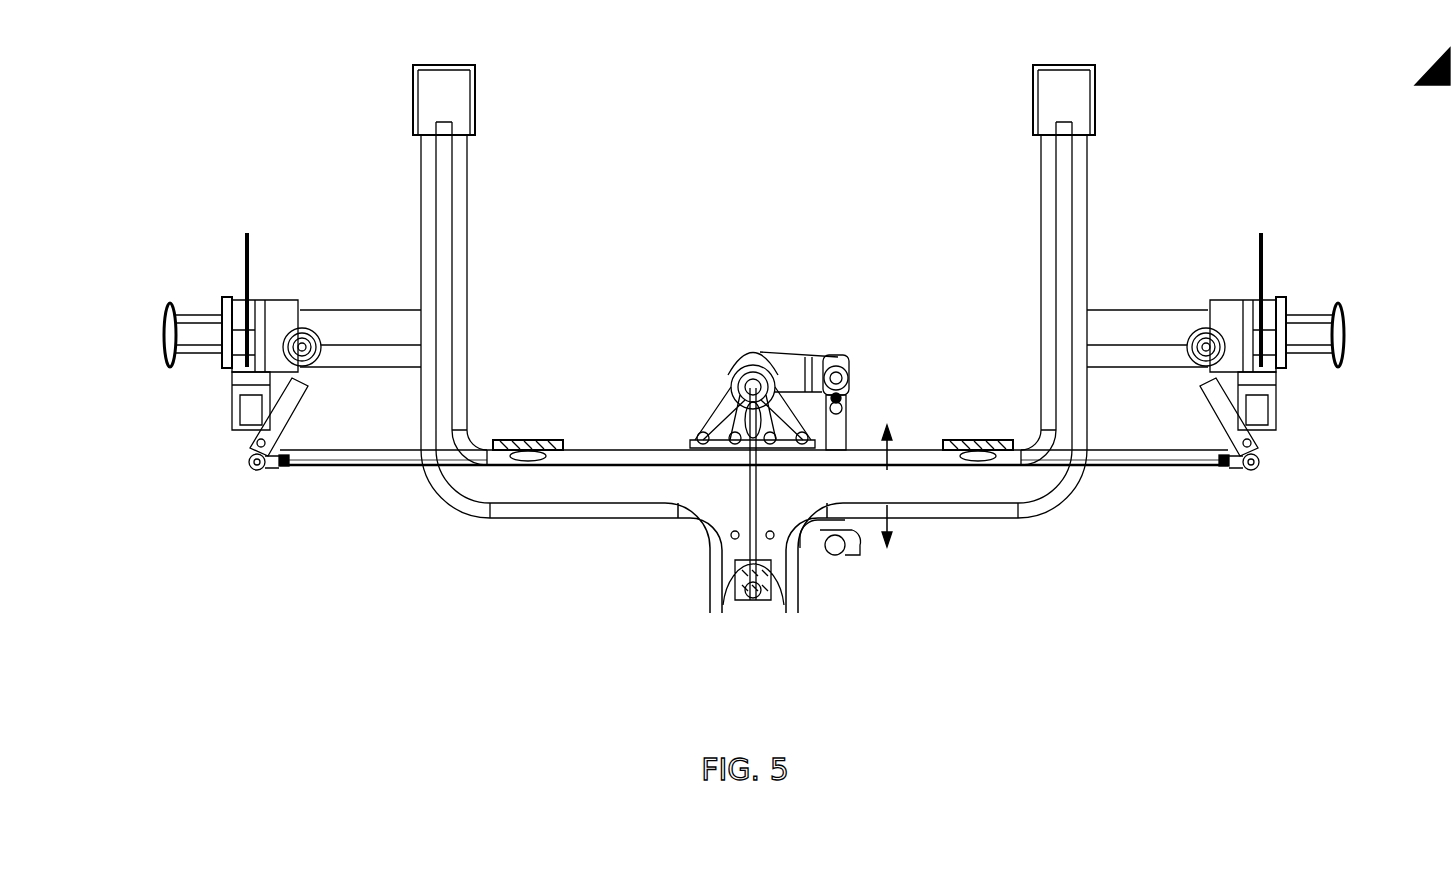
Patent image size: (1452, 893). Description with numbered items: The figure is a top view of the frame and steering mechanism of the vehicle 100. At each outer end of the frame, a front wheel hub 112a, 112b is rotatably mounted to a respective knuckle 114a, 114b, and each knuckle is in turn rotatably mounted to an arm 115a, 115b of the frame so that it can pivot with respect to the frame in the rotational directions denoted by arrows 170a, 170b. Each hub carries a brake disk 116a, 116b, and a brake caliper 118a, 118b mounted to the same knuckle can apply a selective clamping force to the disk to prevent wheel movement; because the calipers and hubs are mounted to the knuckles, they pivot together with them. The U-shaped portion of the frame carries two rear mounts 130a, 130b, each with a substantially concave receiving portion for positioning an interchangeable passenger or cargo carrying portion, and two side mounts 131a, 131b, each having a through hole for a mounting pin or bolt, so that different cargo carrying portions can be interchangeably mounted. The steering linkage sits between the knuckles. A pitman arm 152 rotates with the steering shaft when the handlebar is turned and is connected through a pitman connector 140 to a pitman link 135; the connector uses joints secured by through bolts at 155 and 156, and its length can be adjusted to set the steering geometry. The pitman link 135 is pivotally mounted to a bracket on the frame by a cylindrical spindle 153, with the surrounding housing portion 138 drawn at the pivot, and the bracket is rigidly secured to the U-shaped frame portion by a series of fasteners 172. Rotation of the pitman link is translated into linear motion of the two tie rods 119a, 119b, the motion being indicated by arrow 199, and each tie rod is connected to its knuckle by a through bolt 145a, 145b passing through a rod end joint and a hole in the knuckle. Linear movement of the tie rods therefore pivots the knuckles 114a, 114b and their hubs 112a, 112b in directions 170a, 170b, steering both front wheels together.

The vehicle 100 is at (764, 396).
The hub 112a is at (212, 316).
The hub 112b is at (1336, 312).
The knuckle 114a is at (300, 392).
The knuckle 114b is at (1227, 408).
The arm 115a is at (342, 310).
The arm 115b is at (1108, 312).
The brake disk 116a is at (246, 242).
The brake disk 116b is at (1263, 258).
The brake caliper 118a is at (250, 417).
The brake caliper 118b is at (1272, 387).
The tie rod 119a is at (360, 468).
The tie rod 119b is at (1135, 455).
The rear mount 130a is at (492, 320).
The rear mount 130b is at (988, 440).
The side mount 131a is at (478, 100).
The side mount 131b is at (1032, 98).
The pitman link 135 is at (800, 348).
The pivot housing 138 is at (740, 375).
The pitman connector 140 is at (840, 432).
The through bolt 145a is at (262, 472).
The through bolt 145b is at (1252, 472).
The pitman arm 152 is at (815, 548).
The cylindrical spindle 153 is at (753, 350).
The through bolt 155 is at (845, 548).
The through bolt 156 is at (856, 352).
The arrow 170a is at (126, 274).
The arrow 170b is at (1384, 274).
The fasteners 172 is at (722, 438).
The arrow 199 is at (886, 486).